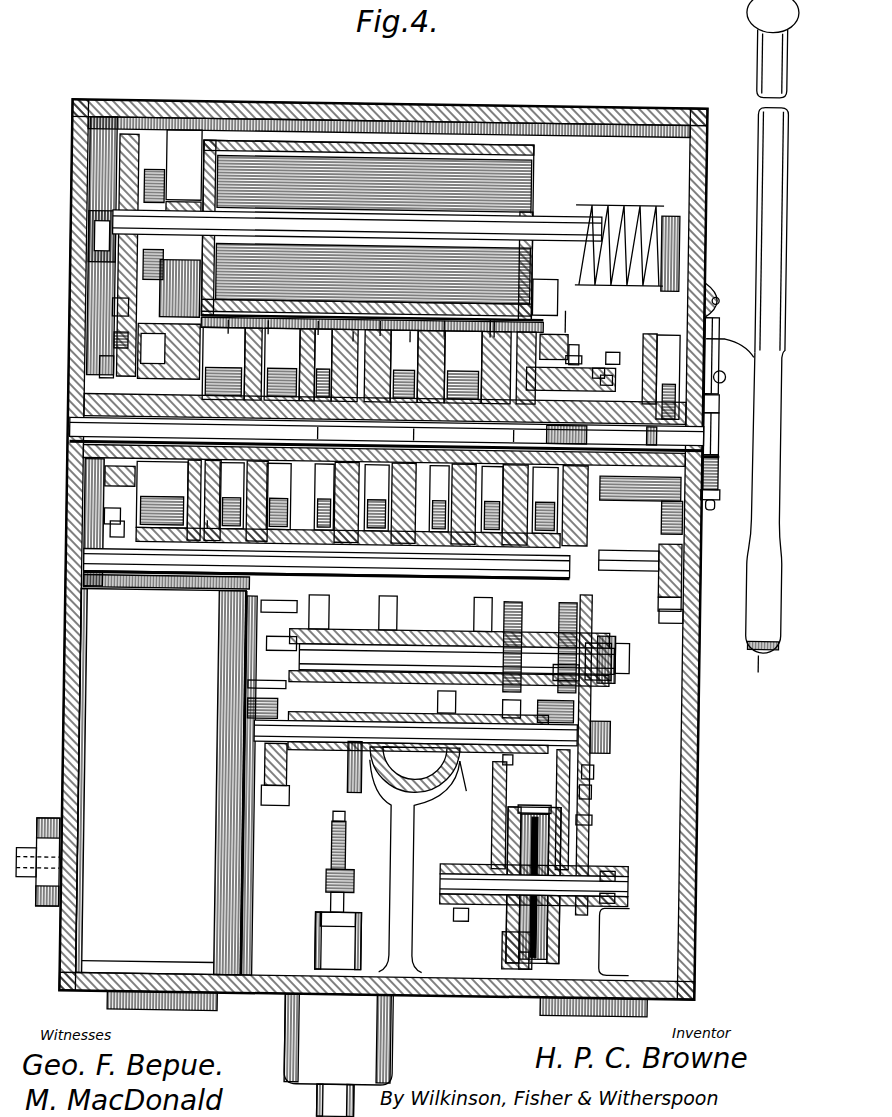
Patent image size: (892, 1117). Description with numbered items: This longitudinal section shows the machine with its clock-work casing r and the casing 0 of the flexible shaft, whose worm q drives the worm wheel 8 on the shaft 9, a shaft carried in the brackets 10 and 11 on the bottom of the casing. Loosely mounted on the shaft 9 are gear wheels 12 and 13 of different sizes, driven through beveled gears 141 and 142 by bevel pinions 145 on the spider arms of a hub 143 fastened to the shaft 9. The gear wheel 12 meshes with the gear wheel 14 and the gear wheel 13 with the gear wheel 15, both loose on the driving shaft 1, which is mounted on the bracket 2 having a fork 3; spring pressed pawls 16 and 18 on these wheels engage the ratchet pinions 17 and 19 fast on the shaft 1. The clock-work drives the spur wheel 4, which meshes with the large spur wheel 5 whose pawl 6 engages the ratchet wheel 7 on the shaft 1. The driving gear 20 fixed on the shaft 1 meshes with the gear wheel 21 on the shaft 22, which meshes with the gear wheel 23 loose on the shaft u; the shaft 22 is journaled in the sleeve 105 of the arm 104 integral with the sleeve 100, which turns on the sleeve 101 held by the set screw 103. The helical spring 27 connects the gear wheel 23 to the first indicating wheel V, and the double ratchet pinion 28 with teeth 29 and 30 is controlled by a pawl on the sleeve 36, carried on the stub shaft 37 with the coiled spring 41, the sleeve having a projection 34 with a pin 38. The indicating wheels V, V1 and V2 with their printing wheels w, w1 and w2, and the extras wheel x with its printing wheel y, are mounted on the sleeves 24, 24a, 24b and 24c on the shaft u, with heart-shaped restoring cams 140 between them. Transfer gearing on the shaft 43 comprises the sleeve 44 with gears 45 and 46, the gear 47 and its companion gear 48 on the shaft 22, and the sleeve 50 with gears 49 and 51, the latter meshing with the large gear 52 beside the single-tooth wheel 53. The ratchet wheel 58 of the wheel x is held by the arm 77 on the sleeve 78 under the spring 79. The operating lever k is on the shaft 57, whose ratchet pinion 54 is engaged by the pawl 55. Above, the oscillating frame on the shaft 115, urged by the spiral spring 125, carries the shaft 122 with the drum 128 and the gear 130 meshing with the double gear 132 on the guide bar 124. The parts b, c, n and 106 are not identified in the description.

The casing top wall b is at (404, 112).
The gear wheel 130 is at (121, 166).
The drum 128 is at (373, 236).
The shaft 122 is at (315, 224).
The spiral spring 125 is at (600, 215).
The shaft 115 is at (672, 208).
The guide bar 124 is at (540, 302).
The printing wheel for the extras y is at (225, 322).
The printing wheel w2 is at (265, 322).
The fare-indicating wheel V2 is at (315, 322).
The heart-shaped cam 140 is at (350, 332).
The printing wheel w1 is at (377, 321).
The gear wheel 53 is at (407, 331).
The fare-indicating wheel V1 is at (441, 320).
The printing wheel w is at (487, 318).
The fare-indicating wheel V is at (567, 309).
The coiled spring 41 is at (571, 342).
The projection 34 is at (571, 355).
The pin 38 is at (598, 369).
The sleeve 36 is at (610, 353).
The stub shaft 37 is at (604, 375).
The double ratchet pinion 28 is at (654, 393).
The spring operated pawl 55 is at (702, 348).
The wheel for extras x is at (111, 329).
The double gear wheel 132 is at (112, 344).
The ratchet wheel 58 is at (98, 377).
The sleeve 24 is at (96, 463).
The sleeve 24a is at (300, 433).
The sleeve 24b is at (396, 435).
The sleeve 24c is at (496, 438).
The helical spring 27 is at (578, 503).
The gear wheel 46 is at (565, 557).
The gear wheel 23 is at (684, 548).
The sleeve 78 is at (170, 588).
The arm 77 is at (106, 526).
The spring 79 is at (100, 551).
The casing r is at (161, 781).
The gear wheel 51 is at (302, 649).
The bracket 106 is at (301, 608).
The bracket 10 is at (634, 926).
The gear wheel 52 is at (410, 545).
The sleeve 50 is at (414, 610).
The gear wheel 49 is at (470, 613).
The shaft 43 is at (511, 573).
The gear wheel 21 is at (597, 622).
The shaft 22 is at (591, 649).
The gear wheel 45 is at (687, 608).
The ratchet wheel 7 is at (261, 720).
The sleeve 105 is at (263, 702).
The spring pressed pawl 6 is at (249, 683).
The spur wheel 5 is at (280, 767).
The spur wheel 4 is at (281, 797).
The gear wheel 48 is at (439, 698).
The spring pressed pawl 18 is at (514, 694).
The sleeve 44 is at (577, 680).
The spring pressed pawl 16 is at (579, 706).
The driving shaft 1 is at (619, 733).
The gear wheel 14 is at (603, 769).
The driving gear wheel 20 is at (598, 785).
The beveled gear 142 is at (605, 820).
The sleeve 100 is at (414, 770).
The sleeve 101 is at (349, 751).
The bracket 2 is at (411, 839).
The gear wheel 47 is at (470, 777).
The gear wheel 15 is at (483, 815).
The pinion 19 is at (518, 773).
The ratchet pinion 17 is at (551, 809).
The gear wheel 13 is at (496, 852).
The gear wheel 12 is at (575, 857).
The shaft 9 is at (433, 875).
The bracket 11 is at (468, 927).
The hub 143 is at (647, 904).
The beveled gear 141 is at (511, 945).
The beveled gear pinion 145 is at (526, 961).
The worm wheel 8 is at (351, 850).
The set screw 103 is at (362, 826).
The worm q is at (333, 873).
The arm 104 is at (337, 891).
The casing 0 is at (368, 952).
The fork 3 is at (38, 857).
The operating lever k is at (765, 205).
The handle end n is at (759, 678).
The crank arm c is at (730, 360).
The ratchet pinion 54 is at (725, 391).
The shaft u is at (679, 436).
The shaft 57 is at (716, 459).
The teeth 30 is at (716, 486).
The teeth 29 is at (716, 502).